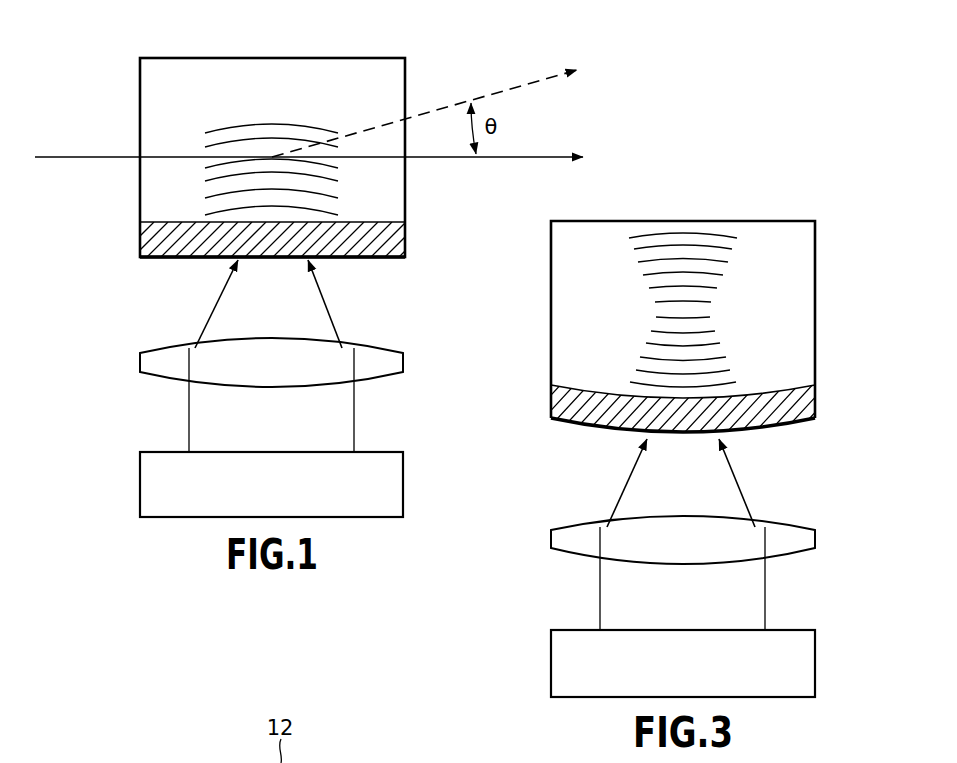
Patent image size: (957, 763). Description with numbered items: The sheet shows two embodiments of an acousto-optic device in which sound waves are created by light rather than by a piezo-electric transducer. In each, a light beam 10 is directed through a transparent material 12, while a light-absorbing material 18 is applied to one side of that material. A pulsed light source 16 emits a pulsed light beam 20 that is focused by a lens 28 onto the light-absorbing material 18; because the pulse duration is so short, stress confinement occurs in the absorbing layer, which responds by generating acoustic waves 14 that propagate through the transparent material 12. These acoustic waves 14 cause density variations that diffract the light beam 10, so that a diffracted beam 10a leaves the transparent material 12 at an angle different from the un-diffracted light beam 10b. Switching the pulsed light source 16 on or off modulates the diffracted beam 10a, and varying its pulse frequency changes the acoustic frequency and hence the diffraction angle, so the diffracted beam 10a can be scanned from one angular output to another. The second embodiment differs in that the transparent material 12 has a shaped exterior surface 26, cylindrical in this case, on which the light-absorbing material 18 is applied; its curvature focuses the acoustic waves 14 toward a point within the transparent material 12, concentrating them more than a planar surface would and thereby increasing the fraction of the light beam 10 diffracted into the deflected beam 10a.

In FIG. 1, the light beam 10 is at (83, 157).
In FIG. 1, the diffracted light beam 10a is at (512, 87).
In FIG. 1, the un-diffracted light beam 10b is at (492, 161).
In FIG. 1, the transparent material 12 is at (200, 58).
In FIG. 3, the transparent material 12 is at (778, 220).
In FIG. 1, the acoustic waves 14 is at (272, 125).
In FIG. 3, the acoustic waves 14 is at (715, 235).
In FIG. 1, the pulsed light source 16 is at (260, 496).
In FIG. 3, the pulsed light source 16 is at (671, 673).
In FIG. 1, the light-absorbing material 18 is at (140, 241).
In FIG. 3, the light-absorbing material 18 is at (816, 405).
In FIG. 1, the pulsed light beam 20 is at (189, 420).
In FIG. 3, the pulsed light beam 20 is at (766, 600).
In FIG. 3, the exterior surface 26 is at (588, 388).
In FIG. 1, the lens 28 is at (140, 362).
In FIG. 3, the lens 28 is at (551, 540).